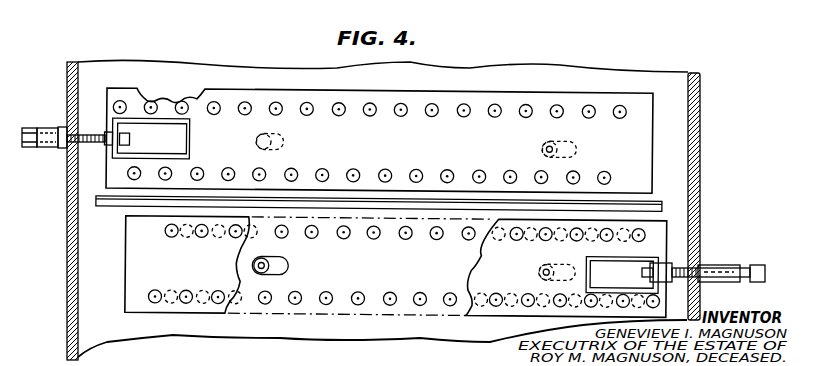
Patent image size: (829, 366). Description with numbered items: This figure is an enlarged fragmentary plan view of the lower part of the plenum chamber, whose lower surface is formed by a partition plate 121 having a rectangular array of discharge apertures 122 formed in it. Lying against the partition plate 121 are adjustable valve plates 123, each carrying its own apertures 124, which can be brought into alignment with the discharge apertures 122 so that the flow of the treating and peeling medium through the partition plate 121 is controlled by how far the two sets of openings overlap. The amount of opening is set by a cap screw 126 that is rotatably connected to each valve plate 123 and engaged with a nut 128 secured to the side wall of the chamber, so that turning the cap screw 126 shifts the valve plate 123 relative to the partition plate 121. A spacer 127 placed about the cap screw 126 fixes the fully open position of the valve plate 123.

The partition plate 121 is at (618, 77).
The discharge apertures 122 is at (150, 104).
The adjustable valve plate 123 is at (542, 102).
The apertures 124 is at (203, 237).
The cap screw 126 is at (100, 140).
The spacer 127 is at (54, 149).
The nut 128 is at (65, 128).